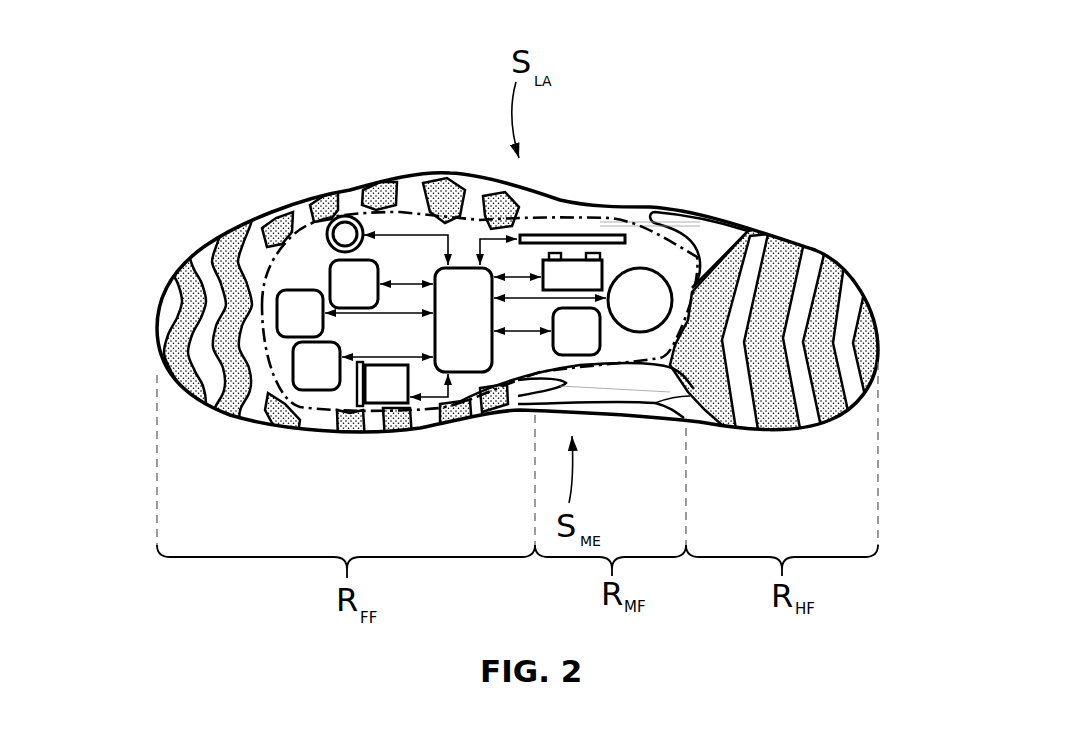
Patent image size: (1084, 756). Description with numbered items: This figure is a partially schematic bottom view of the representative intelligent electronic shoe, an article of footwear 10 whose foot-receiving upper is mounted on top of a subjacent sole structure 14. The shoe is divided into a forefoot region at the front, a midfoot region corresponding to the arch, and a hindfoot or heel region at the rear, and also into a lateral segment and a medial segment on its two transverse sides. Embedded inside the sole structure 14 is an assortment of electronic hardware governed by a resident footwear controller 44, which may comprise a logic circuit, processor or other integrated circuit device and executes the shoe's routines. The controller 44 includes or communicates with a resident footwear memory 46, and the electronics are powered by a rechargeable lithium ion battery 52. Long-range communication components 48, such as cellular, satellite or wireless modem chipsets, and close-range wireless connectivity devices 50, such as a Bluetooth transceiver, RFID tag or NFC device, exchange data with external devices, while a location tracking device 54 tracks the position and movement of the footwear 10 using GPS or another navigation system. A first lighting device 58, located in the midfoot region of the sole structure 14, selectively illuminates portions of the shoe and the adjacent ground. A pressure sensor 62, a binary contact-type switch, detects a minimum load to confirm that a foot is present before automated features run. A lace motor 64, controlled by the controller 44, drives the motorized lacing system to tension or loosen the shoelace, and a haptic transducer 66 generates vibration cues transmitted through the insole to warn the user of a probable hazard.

The article of footwear 10 is at (282, 93).
The sole structure 14 is at (160, 266).
The footwear controller 44 is at (465, 316).
The resident footwear memory 46 is at (316, 366).
The long-range communication components 48 is at (354, 284).
The close-range wireless connectivity devices 50 is at (300, 313).
The lithium ion battery 52 is at (572, 272).
The location tracking device 54 is at (576, 331).
The first lighting device 58 is at (545, 232).
The pressure sensor 62 is at (337, 214).
The lace motor 64 is at (635, 267).
The haptic transducer 66 is at (382, 384).